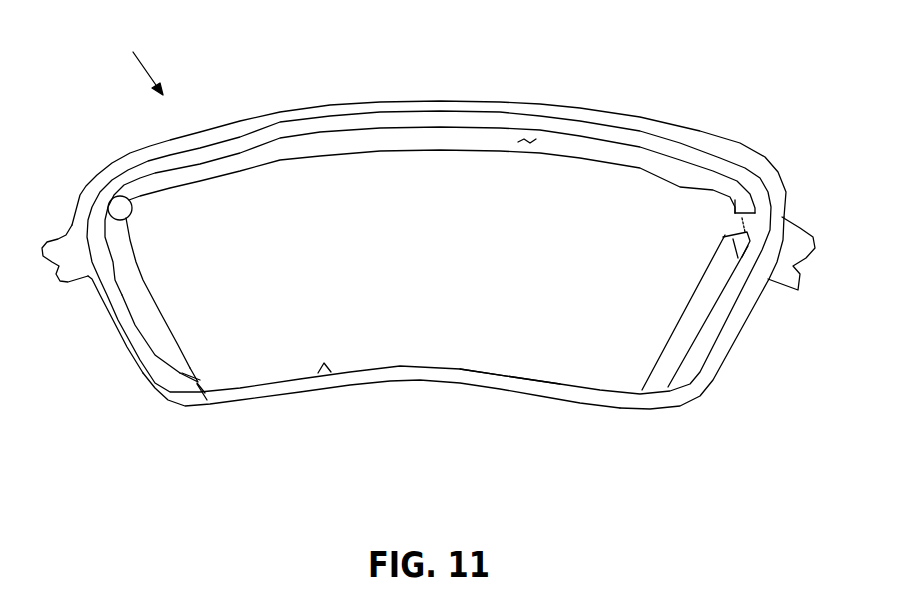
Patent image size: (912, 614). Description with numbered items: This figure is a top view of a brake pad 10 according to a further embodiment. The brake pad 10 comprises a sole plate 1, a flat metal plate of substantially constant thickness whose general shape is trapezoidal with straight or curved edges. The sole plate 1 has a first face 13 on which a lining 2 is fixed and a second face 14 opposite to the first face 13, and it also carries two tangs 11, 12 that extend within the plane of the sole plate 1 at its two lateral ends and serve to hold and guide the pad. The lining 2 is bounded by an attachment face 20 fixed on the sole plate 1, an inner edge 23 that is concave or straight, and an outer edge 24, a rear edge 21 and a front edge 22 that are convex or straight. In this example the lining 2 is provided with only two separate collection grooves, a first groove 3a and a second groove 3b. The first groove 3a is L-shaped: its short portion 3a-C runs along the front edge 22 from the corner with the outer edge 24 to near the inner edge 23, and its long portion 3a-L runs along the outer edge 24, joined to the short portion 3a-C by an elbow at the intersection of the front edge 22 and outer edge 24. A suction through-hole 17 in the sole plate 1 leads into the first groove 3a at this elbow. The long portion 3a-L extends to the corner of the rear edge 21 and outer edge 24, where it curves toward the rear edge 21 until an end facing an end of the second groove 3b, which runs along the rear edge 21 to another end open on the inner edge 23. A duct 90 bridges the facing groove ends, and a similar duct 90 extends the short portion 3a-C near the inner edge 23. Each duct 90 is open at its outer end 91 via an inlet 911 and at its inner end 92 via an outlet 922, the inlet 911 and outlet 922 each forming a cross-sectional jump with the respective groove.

The sole plate 1 is at (429, 277).
The lining 2 is at (622, 187).
The first groove 3a is at (210, 160).
The long portion 3a-L is at (380, 137).
The short portion 3a-C is at (137, 293).
The second groove 3b is at (690, 337).
The brake pad 10 is at (132, 62).
The tang 11 is at (785, 224).
The tang 12 is at (63, 238).
The first face 13 is at (323, 365).
The second face 14 is at (537, 392).
The suction through-hole 17 is at (120, 209).
The attachment face 20 is at (533, 121).
The rear edge 21 is at (733, 330).
The front edge 22 is at (108, 296).
The inner edge 23 is at (388, 368).
The outer edge 24 is at (478, 110).
The duct 90 is at (737, 221).
The outer end 91 is at (724, 237).
The inner end 92 is at (748, 207).
The inlet 911 is at (740, 276).
The outlet 922 is at (740, 208).